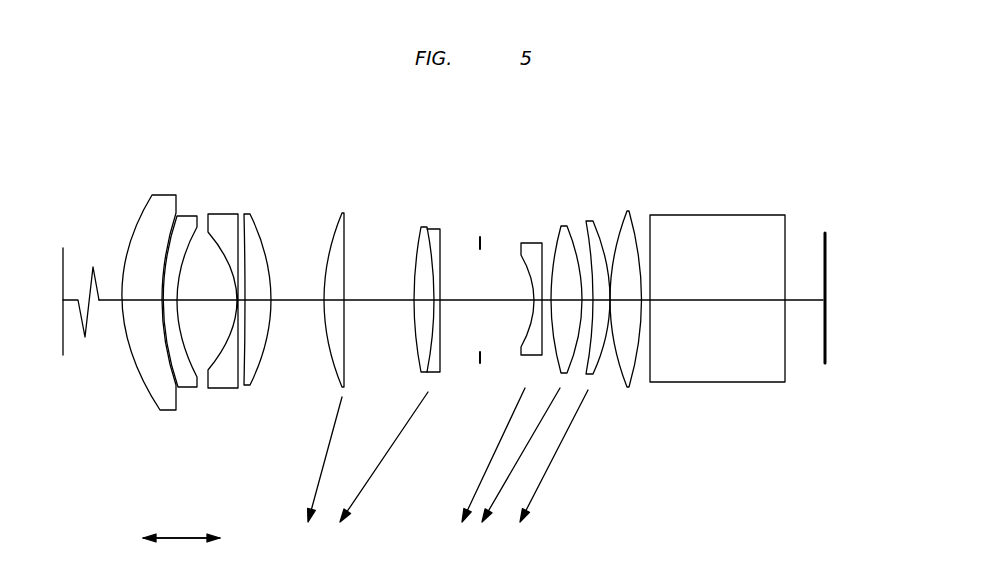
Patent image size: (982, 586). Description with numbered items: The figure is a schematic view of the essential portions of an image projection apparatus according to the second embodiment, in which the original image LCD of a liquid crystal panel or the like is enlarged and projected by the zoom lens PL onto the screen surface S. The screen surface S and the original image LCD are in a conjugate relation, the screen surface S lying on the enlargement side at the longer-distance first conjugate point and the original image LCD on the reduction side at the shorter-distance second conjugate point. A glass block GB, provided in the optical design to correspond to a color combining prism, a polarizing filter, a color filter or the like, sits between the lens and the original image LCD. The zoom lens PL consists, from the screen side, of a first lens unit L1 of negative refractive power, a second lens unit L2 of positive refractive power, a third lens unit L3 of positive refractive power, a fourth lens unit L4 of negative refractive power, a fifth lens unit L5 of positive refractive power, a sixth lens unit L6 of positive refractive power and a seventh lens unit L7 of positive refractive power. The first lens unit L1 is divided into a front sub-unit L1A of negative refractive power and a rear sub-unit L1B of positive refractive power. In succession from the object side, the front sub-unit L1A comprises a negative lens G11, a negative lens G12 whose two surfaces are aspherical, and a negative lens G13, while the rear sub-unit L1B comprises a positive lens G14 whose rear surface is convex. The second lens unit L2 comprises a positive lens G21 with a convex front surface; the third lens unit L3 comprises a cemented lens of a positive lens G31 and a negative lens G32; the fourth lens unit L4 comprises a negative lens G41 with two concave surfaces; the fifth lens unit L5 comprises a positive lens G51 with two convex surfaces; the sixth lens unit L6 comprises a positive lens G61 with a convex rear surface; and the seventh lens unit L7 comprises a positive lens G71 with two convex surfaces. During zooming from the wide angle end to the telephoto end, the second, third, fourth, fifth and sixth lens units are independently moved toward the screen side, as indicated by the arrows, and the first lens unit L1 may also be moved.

The screen surface S is at (64, 260).
The zoom lens PL is at (667, 147).
The first lens unit L1 is at (125, 183).
The 1A-th lens unit L1A is at (118, 477).
The 1B-th lens unit L1B is at (255, 477).
The second lens unit L2 is at (323, 182).
The third lens unit L3 is at (410, 181).
The fourth lens unit L4 is at (509, 181).
The fifth lens unit L5 is at (548, 181).
The sixth lens unit L6 is at (579, 181).
The seventh lens unit L7 is at (611, 181).
The negative lens G11 is at (163, 403).
The negative lens G12 is at (193, 389).
The negative lens G13 is at (225, 388).
The positive lens G14 is at (247, 386).
The positive lens G21 is at (325, 322).
The positive lens G31 is at (415, 363).
The negative lens G32 is at (436, 366).
The negative lens G41 is at (522, 347).
The positive lens G51 is at (568, 377).
The positive lens G61 is at (592, 376).
The positive lens G71 is at (628, 386).
The glass block GB is at (712, 222).
The original image LCD is at (826, 238).